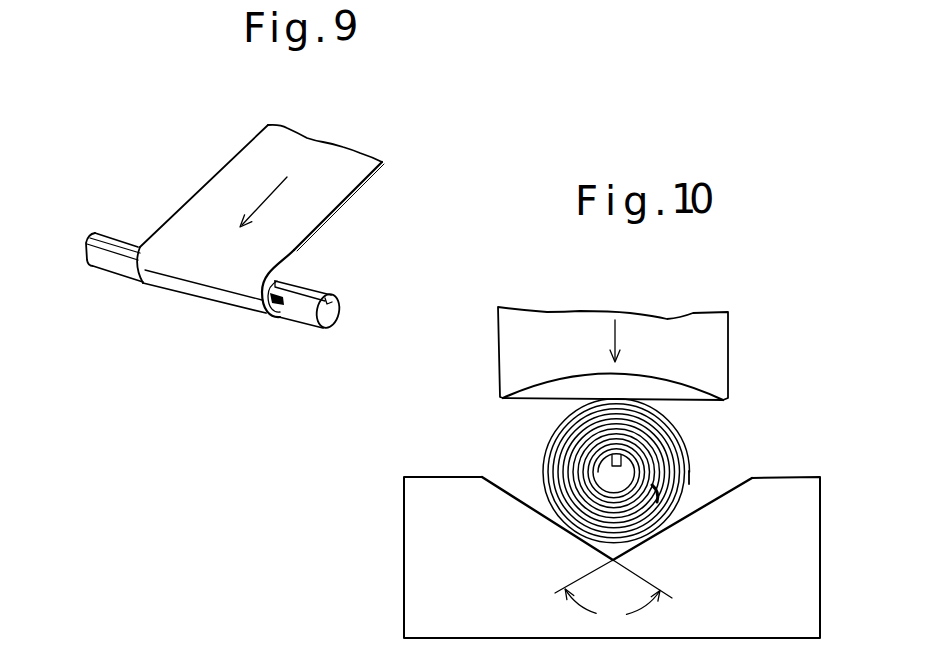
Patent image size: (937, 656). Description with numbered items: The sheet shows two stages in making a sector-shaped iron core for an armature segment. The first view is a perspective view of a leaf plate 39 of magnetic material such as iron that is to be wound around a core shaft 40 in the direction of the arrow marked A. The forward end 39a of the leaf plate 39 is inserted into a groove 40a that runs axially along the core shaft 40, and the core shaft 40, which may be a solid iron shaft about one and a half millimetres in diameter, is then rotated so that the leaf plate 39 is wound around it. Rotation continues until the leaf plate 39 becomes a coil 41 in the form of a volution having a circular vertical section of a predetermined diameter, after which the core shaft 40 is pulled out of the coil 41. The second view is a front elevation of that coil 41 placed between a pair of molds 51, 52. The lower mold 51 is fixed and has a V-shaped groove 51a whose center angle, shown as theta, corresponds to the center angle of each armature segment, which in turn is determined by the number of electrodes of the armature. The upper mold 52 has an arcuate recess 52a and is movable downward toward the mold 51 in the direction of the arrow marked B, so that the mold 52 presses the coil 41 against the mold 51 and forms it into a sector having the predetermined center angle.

In FIG. 9, the leaf plate 39 is at (353, 193).
In FIG. 10, the leaf plate 39 is at (554, 448).
In FIG. 9, the forward end 39a is at (300, 297).
In FIG. 9, the core shaft 40 is at (325, 307).
In FIG. 9, the groove 40a is at (341, 307).
In FIG. 10, the coil 41 is at (689, 450).
In FIG. 10, the mold 51 is at (799, 476).
In FIG. 10, the V-shaped groove 51a is at (730, 489).
In FIG. 10, the mold 52 is at (732, 332).
In FIG. 10, the arcuate recess 52a is at (645, 378).